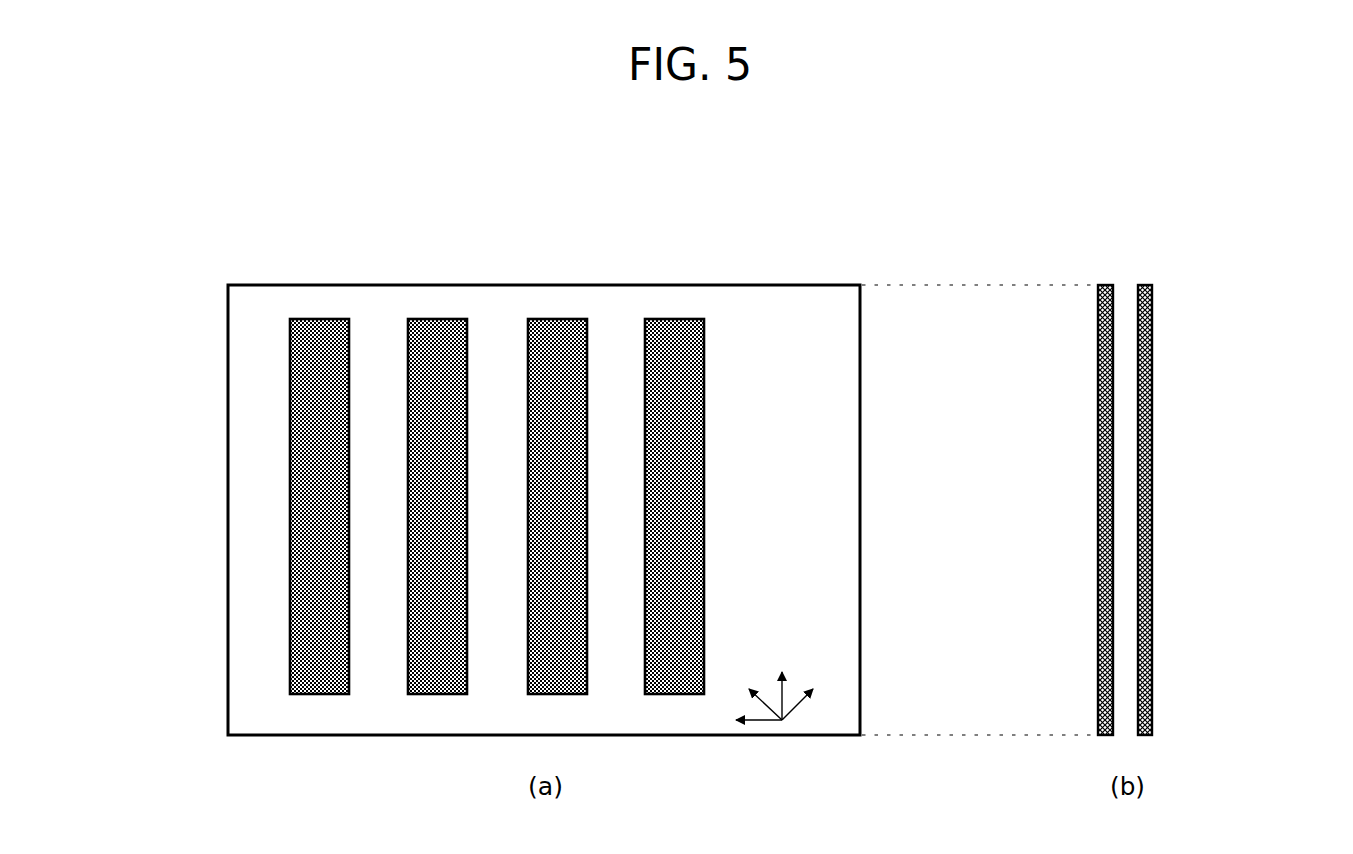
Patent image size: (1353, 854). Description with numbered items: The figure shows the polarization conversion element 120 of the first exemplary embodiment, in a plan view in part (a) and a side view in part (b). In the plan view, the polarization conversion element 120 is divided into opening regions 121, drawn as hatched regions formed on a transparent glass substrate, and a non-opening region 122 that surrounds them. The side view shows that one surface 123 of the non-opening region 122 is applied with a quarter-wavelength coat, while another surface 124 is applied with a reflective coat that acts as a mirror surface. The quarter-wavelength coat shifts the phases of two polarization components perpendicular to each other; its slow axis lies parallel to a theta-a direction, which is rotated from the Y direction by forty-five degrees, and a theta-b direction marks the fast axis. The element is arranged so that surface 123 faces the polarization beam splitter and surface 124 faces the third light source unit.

The polarization conversion element 120 is at (413, 198).
The opening regions 121 is at (290, 459).
The non-opening region 122 is at (773, 459).
The one surface 123 is at (1098, 332).
The another surface 124 is at (1152, 335).